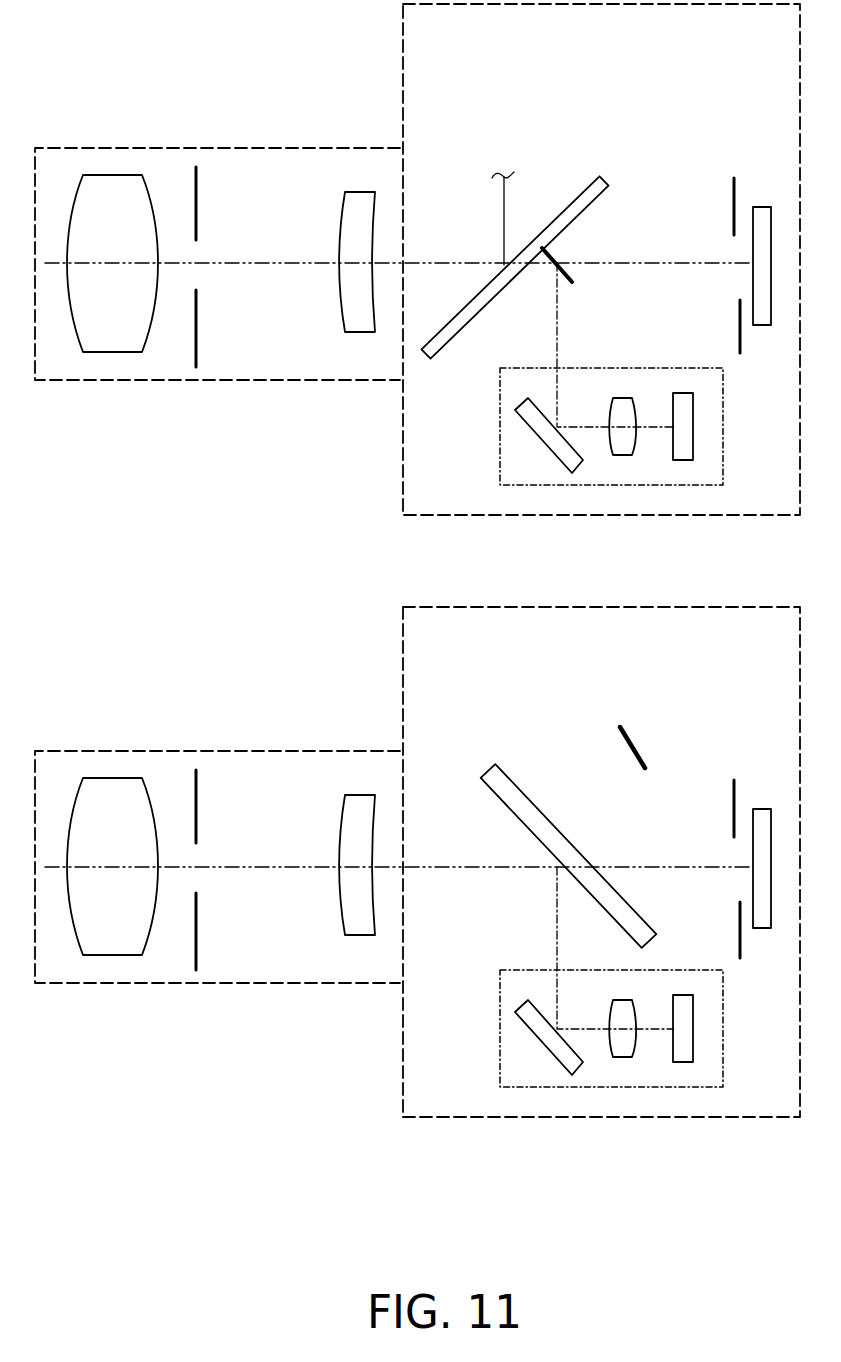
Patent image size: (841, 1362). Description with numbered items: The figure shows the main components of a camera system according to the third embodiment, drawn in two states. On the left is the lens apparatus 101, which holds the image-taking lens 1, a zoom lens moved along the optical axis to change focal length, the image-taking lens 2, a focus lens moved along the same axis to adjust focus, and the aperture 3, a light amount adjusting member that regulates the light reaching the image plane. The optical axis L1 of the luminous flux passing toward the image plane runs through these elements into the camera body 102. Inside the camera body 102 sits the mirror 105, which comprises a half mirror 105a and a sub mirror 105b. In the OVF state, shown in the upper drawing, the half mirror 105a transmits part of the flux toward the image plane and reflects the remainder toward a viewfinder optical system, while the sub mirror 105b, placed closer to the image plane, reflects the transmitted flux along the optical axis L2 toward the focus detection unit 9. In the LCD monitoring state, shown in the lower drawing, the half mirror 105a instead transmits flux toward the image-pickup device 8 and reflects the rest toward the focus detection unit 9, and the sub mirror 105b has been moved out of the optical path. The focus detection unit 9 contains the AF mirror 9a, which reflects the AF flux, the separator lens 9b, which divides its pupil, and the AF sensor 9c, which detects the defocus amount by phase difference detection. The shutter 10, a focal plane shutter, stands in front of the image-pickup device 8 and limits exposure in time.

The image-taking lens 1 is at (112, 175).
The image-taking lens 2 is at (353, 192).
The aperture 3 is at (196, 167).
The image-pickup device 8 is at (762, 207).
The focus detection unit 9 is at (500, 421).
The AF mirror 9a is at (552, 457).
The separator lens 9b is at (622, 457).
The AF sensor 9c is at (683, 460).
The shutter 10 is at (734, 186).
The lens apparatus 101 is at (277, 148).
The camera body 102 is at (403, 33).
The mirror 105 is at (427, 357).
The half mirror 105a is at (559, 213).
The sub mirror 105b is at (560, 257).
The optical axis L1 is at (268, 267).
The optical axis L2 is at (558, 321).